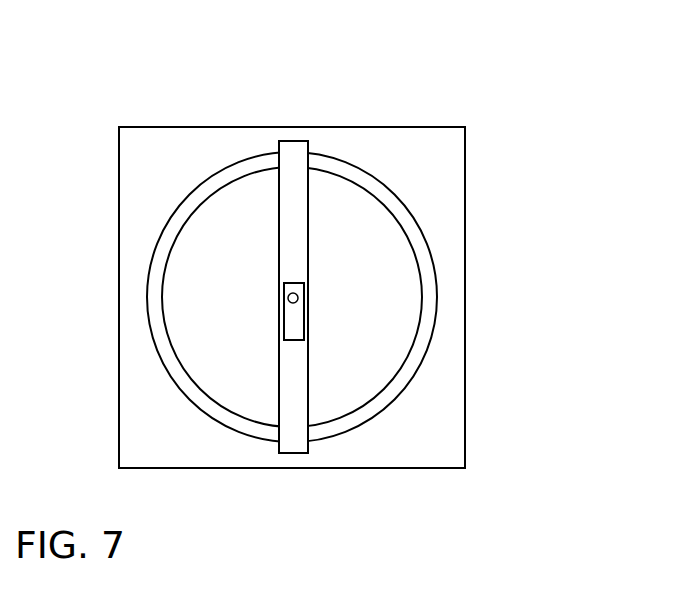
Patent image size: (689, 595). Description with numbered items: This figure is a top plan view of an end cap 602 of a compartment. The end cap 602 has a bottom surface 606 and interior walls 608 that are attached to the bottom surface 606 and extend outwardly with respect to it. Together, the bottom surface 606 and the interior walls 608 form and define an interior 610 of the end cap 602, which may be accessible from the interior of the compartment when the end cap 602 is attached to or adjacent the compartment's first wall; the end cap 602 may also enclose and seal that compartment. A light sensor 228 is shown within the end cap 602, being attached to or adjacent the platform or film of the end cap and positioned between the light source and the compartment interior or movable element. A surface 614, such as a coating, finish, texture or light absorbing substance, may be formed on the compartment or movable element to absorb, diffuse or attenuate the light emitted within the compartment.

The end cap 602 is at (145, 118).
The bottom surface 606 is at (376, 246).
The interior walls 608 is at (156, 371).
The interior 610 is at (406, 298).
The surface 614 is at (299, 132).
The light sensor 228 is at (298, 304).